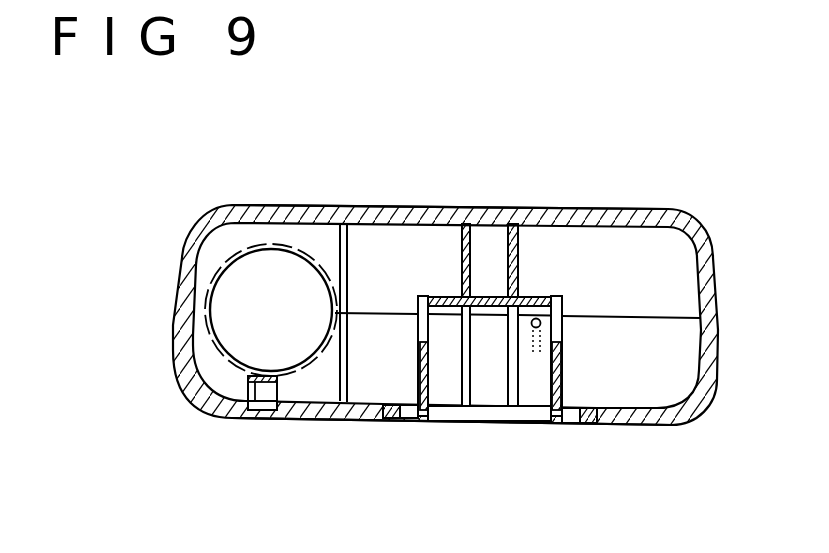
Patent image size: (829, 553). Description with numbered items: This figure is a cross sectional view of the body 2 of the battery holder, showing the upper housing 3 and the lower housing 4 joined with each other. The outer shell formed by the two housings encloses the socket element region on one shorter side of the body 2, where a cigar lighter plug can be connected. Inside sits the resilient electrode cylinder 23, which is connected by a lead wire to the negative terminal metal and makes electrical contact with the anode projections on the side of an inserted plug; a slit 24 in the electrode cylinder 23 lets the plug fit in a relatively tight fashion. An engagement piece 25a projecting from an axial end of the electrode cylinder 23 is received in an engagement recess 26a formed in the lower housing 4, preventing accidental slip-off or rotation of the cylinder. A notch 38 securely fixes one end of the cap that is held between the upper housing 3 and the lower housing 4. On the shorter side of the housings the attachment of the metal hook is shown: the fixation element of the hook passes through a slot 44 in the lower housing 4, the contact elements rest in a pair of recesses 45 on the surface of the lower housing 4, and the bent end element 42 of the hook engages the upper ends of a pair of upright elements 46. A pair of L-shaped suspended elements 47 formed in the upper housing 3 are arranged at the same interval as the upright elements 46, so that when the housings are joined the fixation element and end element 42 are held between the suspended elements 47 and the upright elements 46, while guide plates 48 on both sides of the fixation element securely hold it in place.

The body 2 is at (372, 200).
The upper housing 3 is at (578, 209).
The lower housing 4 is at (642, 420).
The electrode cylinder 23 is at (178, 284).
The slit 24 is at (280, 373).
The engagement piece 25a is at (268, 417).
The engagement recess 26a is at (250, 418).
The notch 38 is at (543, 326).
The end element 42 is at (543, 298).
The slot 44 is at (490, 421).
The recess 45 is at (400, 420).
The upright element 46 is at (468, 421).
The suspended element 47 is at (510, 207).
The guide plate 48 is at (418, 376).